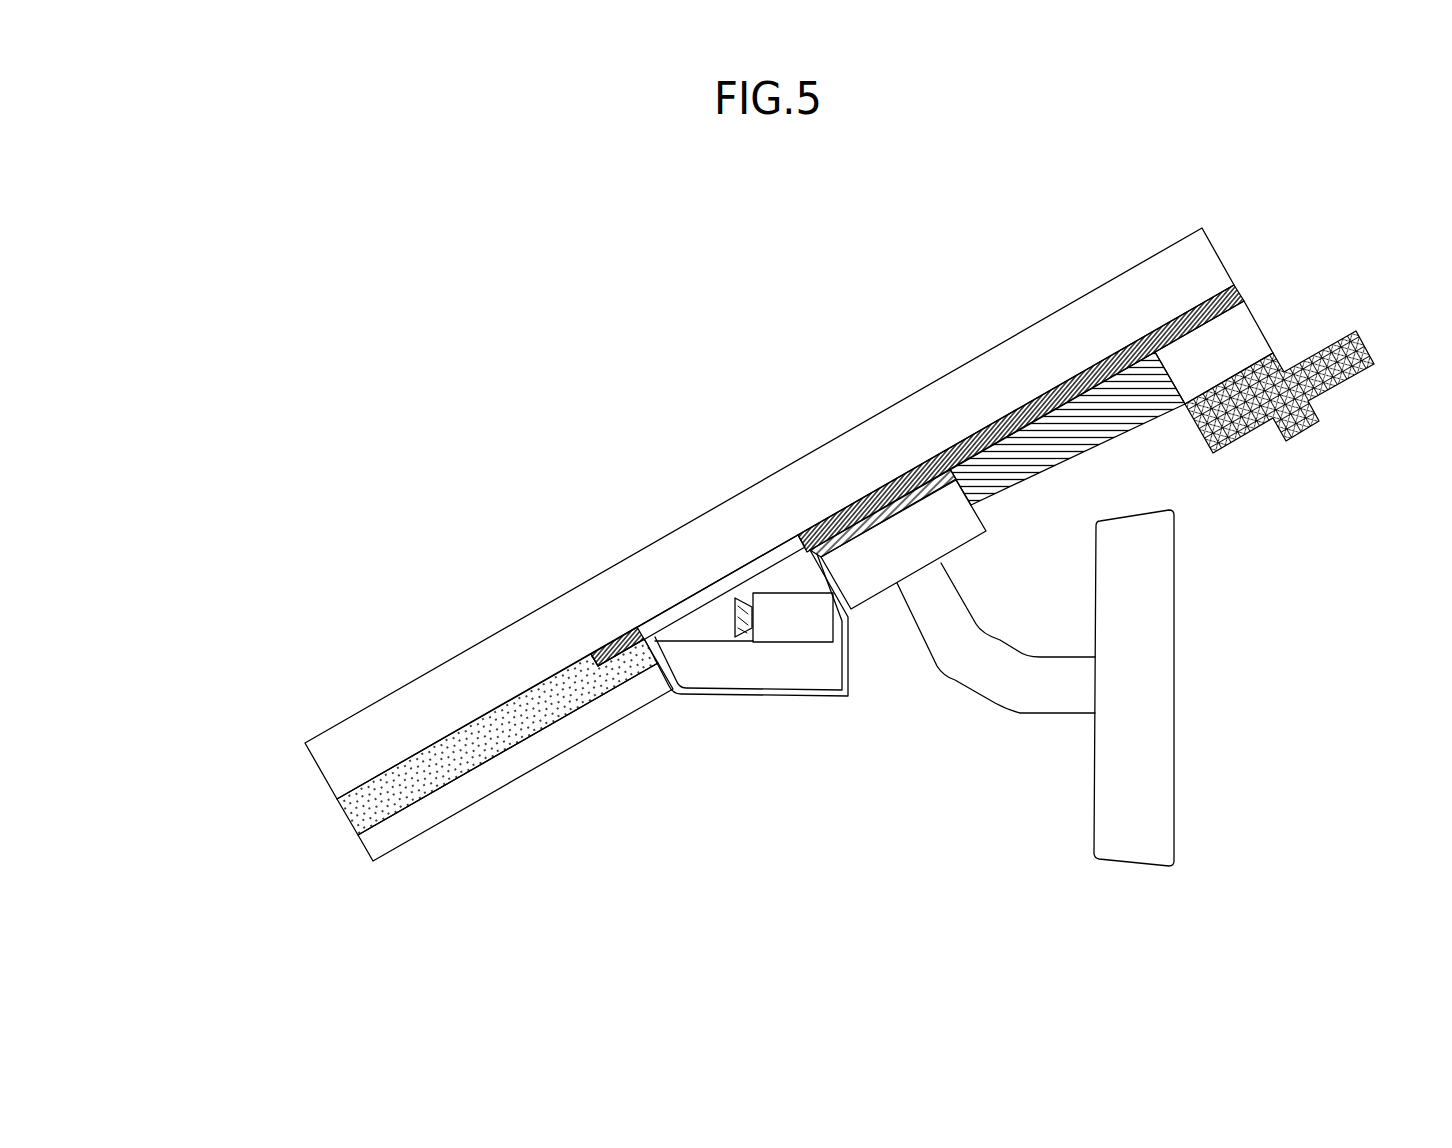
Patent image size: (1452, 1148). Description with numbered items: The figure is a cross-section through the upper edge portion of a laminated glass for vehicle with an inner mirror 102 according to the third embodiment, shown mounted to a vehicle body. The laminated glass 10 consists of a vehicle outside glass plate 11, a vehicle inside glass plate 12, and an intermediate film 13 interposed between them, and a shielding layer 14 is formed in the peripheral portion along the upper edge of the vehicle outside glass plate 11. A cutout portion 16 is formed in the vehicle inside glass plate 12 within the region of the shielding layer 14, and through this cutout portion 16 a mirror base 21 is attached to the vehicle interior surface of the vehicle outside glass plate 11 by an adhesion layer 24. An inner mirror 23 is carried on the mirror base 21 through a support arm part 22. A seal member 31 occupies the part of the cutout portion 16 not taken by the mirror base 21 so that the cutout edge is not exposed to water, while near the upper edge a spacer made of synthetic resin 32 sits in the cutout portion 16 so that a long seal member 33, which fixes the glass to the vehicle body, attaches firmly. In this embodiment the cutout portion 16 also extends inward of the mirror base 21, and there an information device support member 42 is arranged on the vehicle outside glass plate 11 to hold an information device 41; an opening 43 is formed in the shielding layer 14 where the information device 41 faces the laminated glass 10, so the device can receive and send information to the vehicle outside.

The laminated glass for vehicle with an inner mirror 102 is at (783, 548).
The laminated glass 10 is at (708, 576).
The vehicle outside glass plate 11 is at (319, 778).
The vehicle inside glass plate 12 is at (355, 865).
The intermediate film 13 is at (337, 829).
The shielding layer 14 is at (1063, 379).
The cutout portion 16 is at (1094, 421).
The mirror base 21 is at (878, 614).
The support arm part 22 is at (1000, 718).
The inner mirror 23 is at (1194, 648).
The adhesion layer 24 is at (992, 497).
The seal member 31 is at (970, 437).
The spacer made of synthetic resin 32 is at (1264, 320).
The long seal member 33 is at (1270, 441).
The information device 41 is at (790, 626).
The information device support member 42 is at (746, 689).
The opening 43 is at (745, 557).